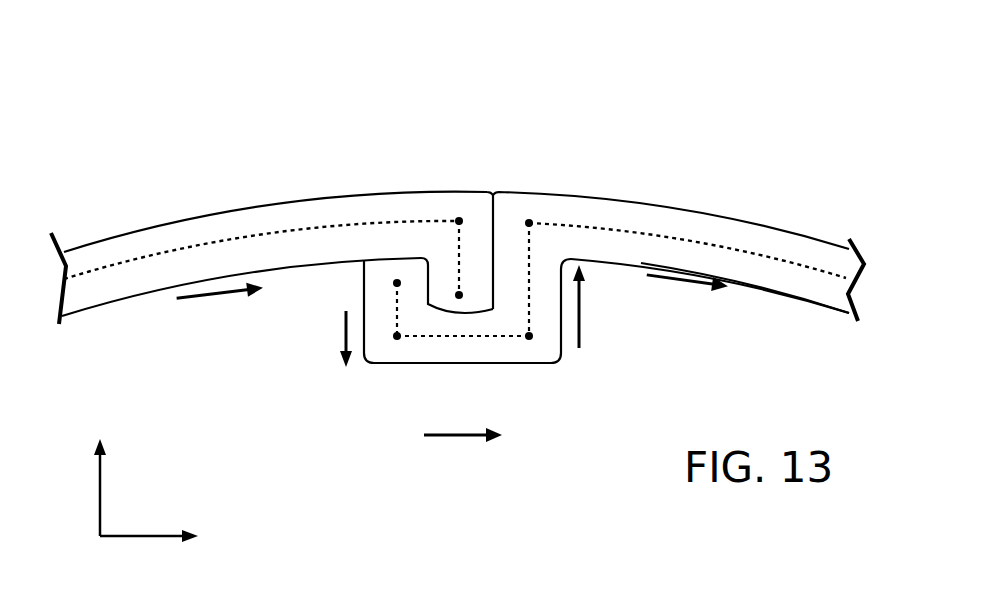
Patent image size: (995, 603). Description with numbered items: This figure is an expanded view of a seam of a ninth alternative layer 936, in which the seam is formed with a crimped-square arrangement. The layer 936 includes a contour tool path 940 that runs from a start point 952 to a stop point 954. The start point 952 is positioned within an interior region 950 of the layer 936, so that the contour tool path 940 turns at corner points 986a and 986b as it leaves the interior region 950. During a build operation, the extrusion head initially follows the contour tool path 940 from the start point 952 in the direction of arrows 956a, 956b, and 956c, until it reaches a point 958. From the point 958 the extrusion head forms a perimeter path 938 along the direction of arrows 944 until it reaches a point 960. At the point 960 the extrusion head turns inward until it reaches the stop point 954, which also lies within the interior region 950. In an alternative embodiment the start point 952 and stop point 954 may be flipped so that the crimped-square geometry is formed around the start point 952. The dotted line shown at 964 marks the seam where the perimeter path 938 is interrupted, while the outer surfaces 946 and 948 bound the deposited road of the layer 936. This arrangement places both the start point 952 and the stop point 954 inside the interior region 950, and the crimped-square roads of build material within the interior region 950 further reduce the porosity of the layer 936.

The layer 936 is at (697, 57).
The perimeter path 938 is at (620, 180).
The contour tool path 940 is at (95, 273).
The arrows 944 is at (213, 297).
The first surface 946 is at (747, 218).
The second surface 948 is at (813, 300).
The interior region 950 is at (330, 508).
The start point 952 is at (396, 282).
The stop point 954 is at (458, 294).
The arrow 956a is at (340, 323).
The arrow 956b is at (453, 434).
The arrow 956c is at (583, 308).
The point 958 is at (528, 222).
The point 960 is at (458, 220).
The slit 964 is at (497, 176).
The corner point 986a is at (396, 335).
The corner point 986b is at (528, 335).